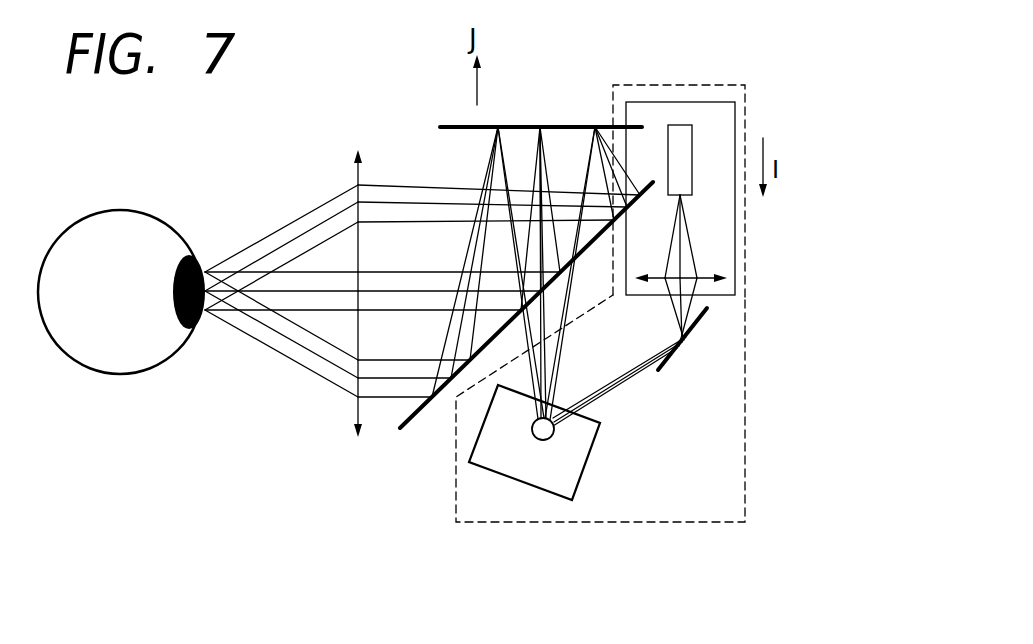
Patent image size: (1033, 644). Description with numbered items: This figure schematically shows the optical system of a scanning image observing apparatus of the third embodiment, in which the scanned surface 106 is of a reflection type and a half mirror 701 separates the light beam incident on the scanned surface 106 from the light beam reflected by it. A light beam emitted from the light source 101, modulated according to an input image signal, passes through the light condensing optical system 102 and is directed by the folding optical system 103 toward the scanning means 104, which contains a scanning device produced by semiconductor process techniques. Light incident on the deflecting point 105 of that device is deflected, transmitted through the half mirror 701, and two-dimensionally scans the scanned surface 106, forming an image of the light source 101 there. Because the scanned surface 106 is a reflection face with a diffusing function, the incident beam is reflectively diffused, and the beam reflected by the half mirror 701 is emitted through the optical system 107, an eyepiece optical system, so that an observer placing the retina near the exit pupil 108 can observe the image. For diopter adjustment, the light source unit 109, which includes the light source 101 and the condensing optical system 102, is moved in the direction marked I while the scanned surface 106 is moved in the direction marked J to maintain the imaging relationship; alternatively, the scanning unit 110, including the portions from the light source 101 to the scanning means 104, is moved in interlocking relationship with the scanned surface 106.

The light source 101 is at (682, 140).
The light condensing optical system 102 is at (700, 278).
The folding optical system 103 is at (670, 367).
The scanning means 104 is at (565, 472).
The deflecting point 105 is at (533, 440).
The scanned surface 106 is at (560, 127).
The optical system 107 is at (353, 412).
The exit pupil 108 is at (203, 328).
The light source unit 109 is at (703, 113).
The scanning unit 110 is at (702, 437).
The half mirror 701 is at (422, 417).